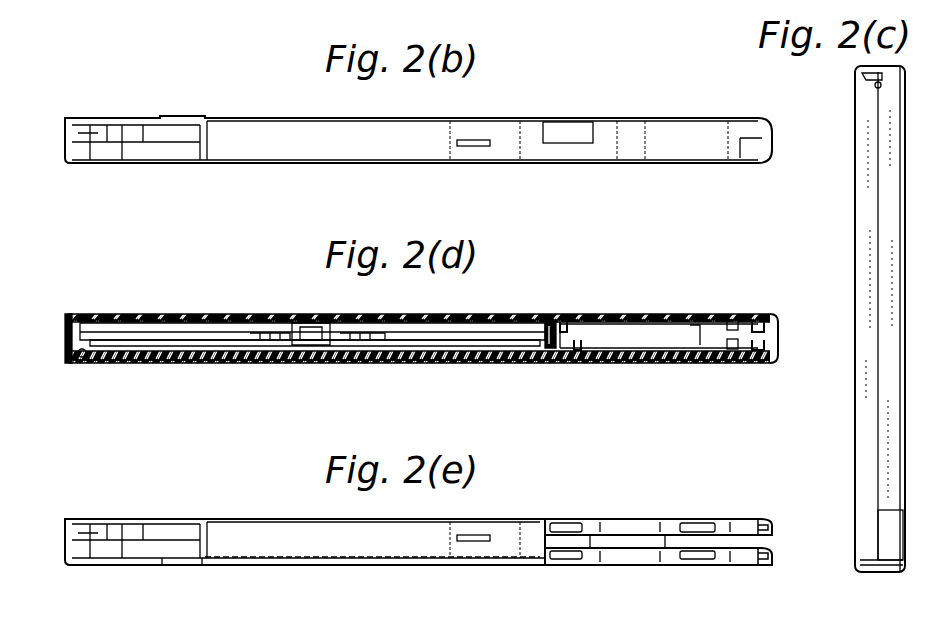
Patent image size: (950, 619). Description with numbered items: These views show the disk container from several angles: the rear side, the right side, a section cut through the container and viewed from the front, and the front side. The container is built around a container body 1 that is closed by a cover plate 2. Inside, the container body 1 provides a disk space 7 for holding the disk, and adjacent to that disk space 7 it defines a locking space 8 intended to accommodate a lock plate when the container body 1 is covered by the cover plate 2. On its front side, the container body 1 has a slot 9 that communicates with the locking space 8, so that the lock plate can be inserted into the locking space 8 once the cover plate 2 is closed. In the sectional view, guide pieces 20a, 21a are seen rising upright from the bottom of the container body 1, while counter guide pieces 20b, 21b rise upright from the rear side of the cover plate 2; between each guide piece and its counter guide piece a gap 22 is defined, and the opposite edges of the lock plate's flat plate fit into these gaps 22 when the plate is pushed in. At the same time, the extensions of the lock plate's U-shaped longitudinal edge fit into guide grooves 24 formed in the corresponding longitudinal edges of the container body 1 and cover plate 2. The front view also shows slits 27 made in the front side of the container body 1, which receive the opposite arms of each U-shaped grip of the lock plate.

In FIG. 2D, the container body 1 is at (192, 364).
In FIG. 2D, the cover plate 2 is at (194, 314).
In FIG. 2D, the disk space 7 is at (384, 323).
In FIG. 2D, the locking space 8 is at (674, 350).
In FIG. 2E, the slot 9 is at (630, 545).
In FIG. 2D, the guide piece 20a is at (580, 345).
In FIG. 2D, the counter guide piece 20b is at (566, 326).
In FIG. 2D, the guide piece 21a is at (733, 350).
In FIG. 2D, the counter guide piece 21b is at (733, 320).
In FIG. 2D, the gap 22 is at (550, 321).
In FIG. 2D, the guide groove 24 is at (762, 322).
In FIG. 2E, the guide groove 24 is at (764, 520).
In FIG. 2E, the slit 27 is at (566, 524).